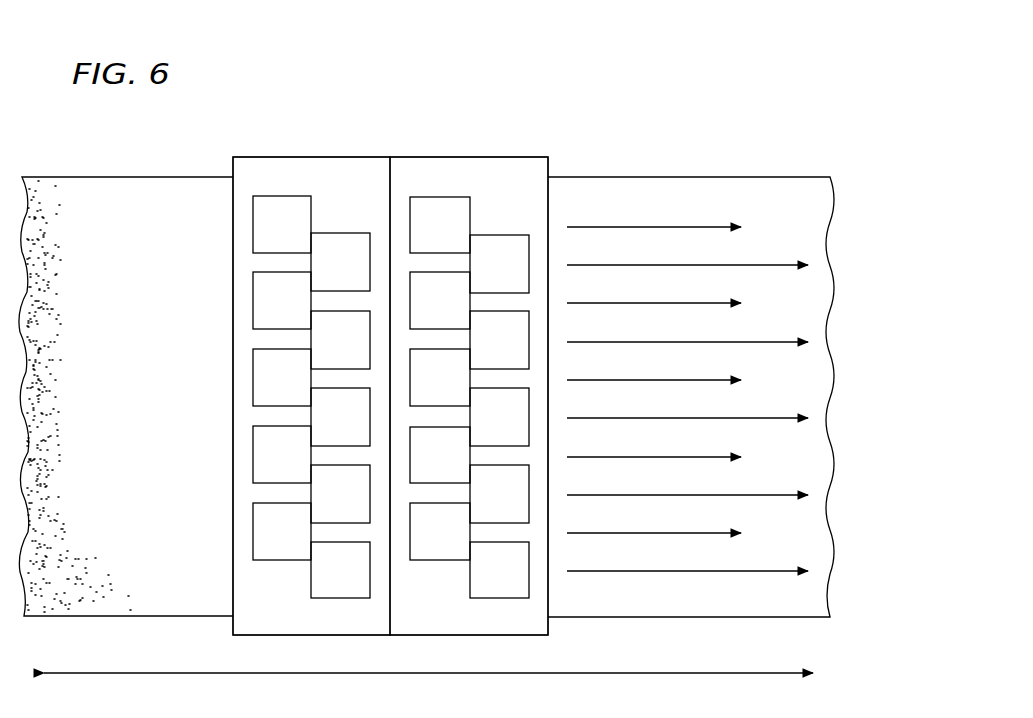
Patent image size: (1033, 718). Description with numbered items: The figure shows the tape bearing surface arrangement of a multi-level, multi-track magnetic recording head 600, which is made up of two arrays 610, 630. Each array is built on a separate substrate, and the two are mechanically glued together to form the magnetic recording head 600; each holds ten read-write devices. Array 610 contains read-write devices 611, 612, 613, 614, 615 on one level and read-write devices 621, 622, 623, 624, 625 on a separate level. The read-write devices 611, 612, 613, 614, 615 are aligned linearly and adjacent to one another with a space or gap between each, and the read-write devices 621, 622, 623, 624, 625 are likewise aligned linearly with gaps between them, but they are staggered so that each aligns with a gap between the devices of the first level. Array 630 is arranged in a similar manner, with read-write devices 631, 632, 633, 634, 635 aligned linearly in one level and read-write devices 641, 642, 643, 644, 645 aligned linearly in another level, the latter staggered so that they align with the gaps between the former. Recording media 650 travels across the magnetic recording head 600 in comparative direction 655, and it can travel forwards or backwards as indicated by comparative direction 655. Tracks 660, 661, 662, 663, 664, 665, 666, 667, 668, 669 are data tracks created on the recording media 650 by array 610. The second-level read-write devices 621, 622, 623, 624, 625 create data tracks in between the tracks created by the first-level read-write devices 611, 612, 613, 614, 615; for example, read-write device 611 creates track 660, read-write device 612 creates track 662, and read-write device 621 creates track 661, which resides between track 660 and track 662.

The magnetic recording head 600 is at (549, 89).
The array 610 is at (308, 154).
The array 630 is at (468, 154).
The read-write device 611 is at (266, 237).
The read-write device 612 is at (266, 313).
The read-write device 613 is at (266, 390).
The read-write device 614 is at (266, 467).
The read-write device 615 is at (266, 544).
The read-write device 621 is at (325, 275).
The read-write device 622 is at (325, 353).
The read-write device 623 is at (325, 430).
The read-write device 624 is at (325, 507).
The read-write device 625 is at (325, 583).
The read-write device 631 is at (424, 237).
The read-write device 632 is at (424, 313).
The read-write device 633 is at (424, 390).
The read-write device 634 is at (424, 467).
The read-write device 635 is at (424, 544).
The read-write device 641 is at (484, 276).
The read-write device 642 is at (484, 353).
The read-write device 643 is at (484, 430).
The read-write device 644 is at (484, 507).
The read-write device 645 is at (484, 583).
The recording media 650 is at (131, 442).
The comparative direction 655 is at (706, 674).
The track 660 is at (717, 228).
The track 661 is at (735, 266).
The track 662 is at (717, 304).
The track 663 is at (735, 343).
The track 664 is at (717, 381).
The track 665 is at (735, 419).
The track 666 is at (717, 458).
The track 667 is at (735, 496).
The track 668 is at (717, 534).
The track 669 is at (735, 572).